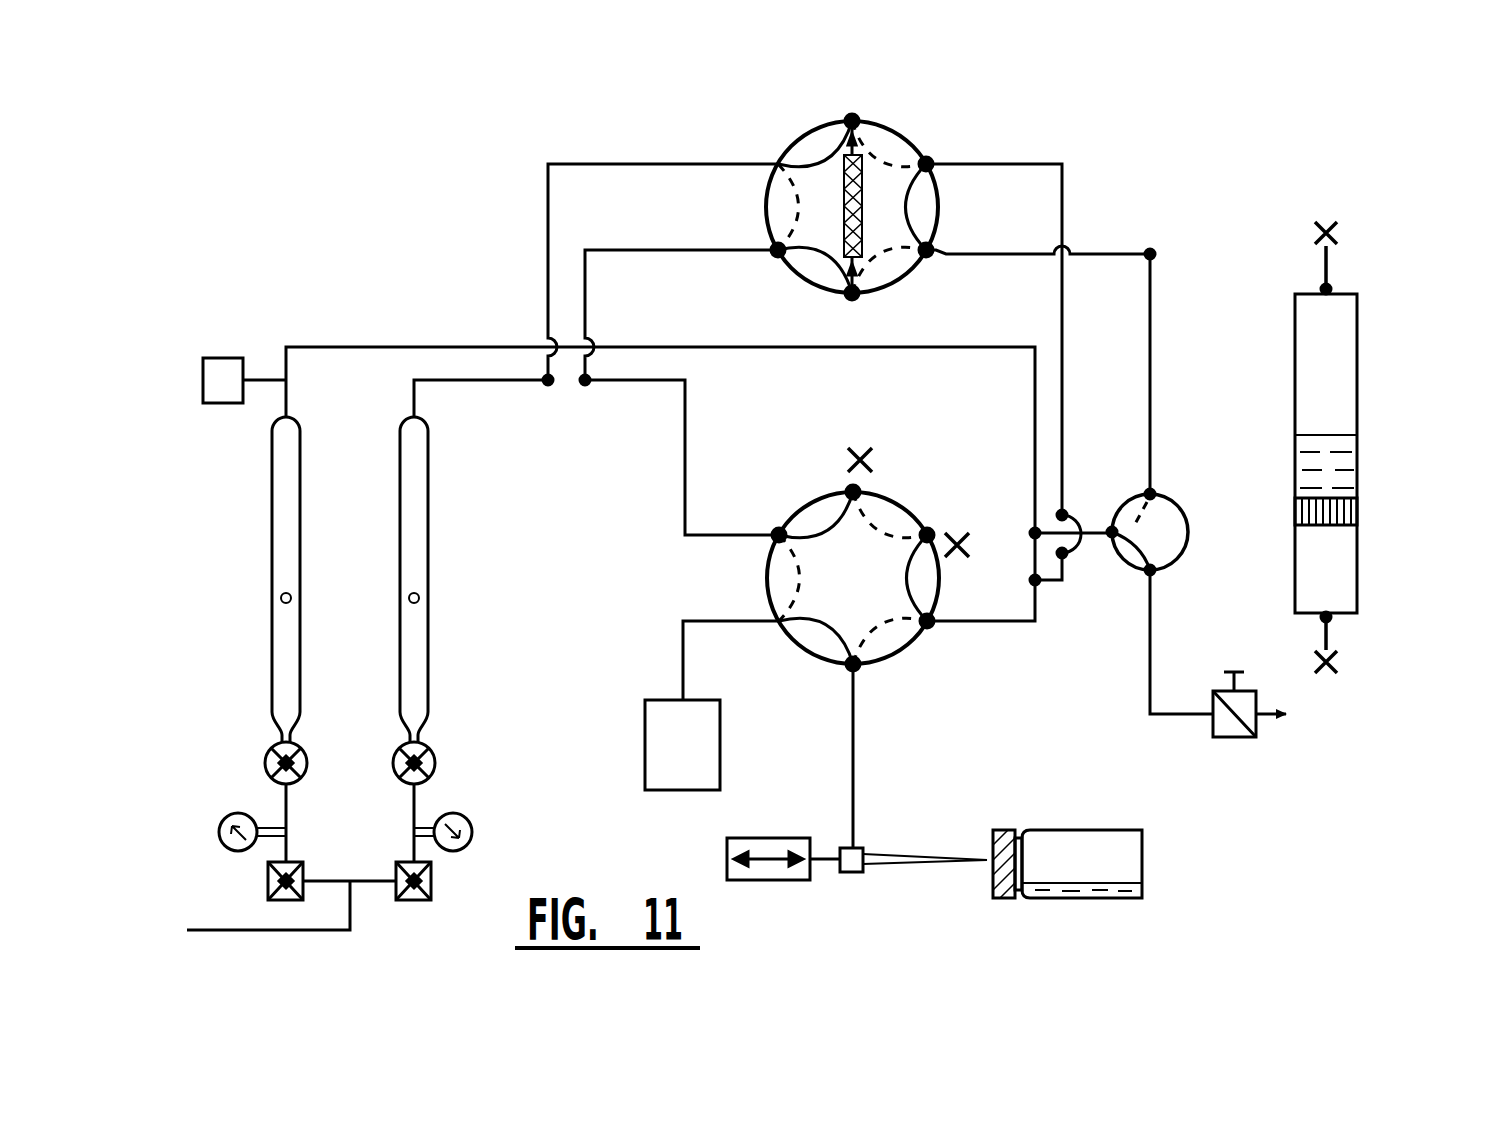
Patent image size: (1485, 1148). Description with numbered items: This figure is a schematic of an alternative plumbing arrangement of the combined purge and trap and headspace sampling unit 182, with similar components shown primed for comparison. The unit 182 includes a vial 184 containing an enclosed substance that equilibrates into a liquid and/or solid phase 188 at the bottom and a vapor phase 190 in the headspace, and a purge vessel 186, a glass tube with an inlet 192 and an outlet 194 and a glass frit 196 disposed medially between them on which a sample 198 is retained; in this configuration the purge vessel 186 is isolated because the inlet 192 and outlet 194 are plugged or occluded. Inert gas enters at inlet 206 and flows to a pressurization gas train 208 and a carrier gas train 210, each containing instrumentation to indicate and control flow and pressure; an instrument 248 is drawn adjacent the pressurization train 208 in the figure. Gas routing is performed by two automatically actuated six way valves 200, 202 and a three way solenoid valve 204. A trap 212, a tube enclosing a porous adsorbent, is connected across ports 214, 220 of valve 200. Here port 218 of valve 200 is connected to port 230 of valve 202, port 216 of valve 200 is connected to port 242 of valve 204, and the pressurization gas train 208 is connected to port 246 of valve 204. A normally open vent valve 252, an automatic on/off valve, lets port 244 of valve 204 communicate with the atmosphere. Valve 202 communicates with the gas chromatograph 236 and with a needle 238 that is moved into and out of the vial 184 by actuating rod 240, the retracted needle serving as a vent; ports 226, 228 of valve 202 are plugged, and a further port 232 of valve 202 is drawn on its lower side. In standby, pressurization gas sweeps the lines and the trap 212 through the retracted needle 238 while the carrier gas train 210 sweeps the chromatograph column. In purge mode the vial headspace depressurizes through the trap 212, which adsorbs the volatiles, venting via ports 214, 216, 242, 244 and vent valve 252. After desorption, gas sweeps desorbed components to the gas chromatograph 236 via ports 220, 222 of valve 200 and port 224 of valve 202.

The combined purge and trap and headspace sampling unit 182 is at (499, 218).
The vial 184 is at (1258, 776).
The purge vessel 186 is at (1431, 394).
The liquid and/or solid phase 188 is at (1142, 897).
The vapor phase 190 is at (1115, 855).
The inlet 192 is at (1316, 621).
The outlet 194 is at (1411, 216).
The glass frit 196 is at (1358, 512).
The sample 198 is at (1297, 450).
The six way valve 200 is at (816, 112).
The six way valve 202 is at (976, 411).
The three way solenoid valve 204 is at (1259, 453).
The inlet 206 is at (258, 863).
The pressurization gas train 208 is at (381, 651).
The carrier gas train 210 is at (443, 606).
The trap 212 is at (778, 158).
The port 214 is at (860, 118).
The port 216 is at (934, 168).
The port 218 is at (926, 256).
The port 220 is at (894, 304).
The port 222 is at (777, 256).
The port 224 is at (776, 530).
The port 226 is at (850, 488).
The port 228 is at (1029, 473).
The port 230 is at (930, 626).
The valve port 232 is at (846, 668).
The gas chromatograph 236 is at (645, 736).
The needle 238 is at (976, 764).
The actuating rod 240 is at (841, 746).
The port 242 is at (1110, 540).
The port 244 is at (1153, 574).
The port 246 is at (1148, 492).
The pressure controller 248 is at (228, 357).
The vent valve 252 is at (1238, 742).